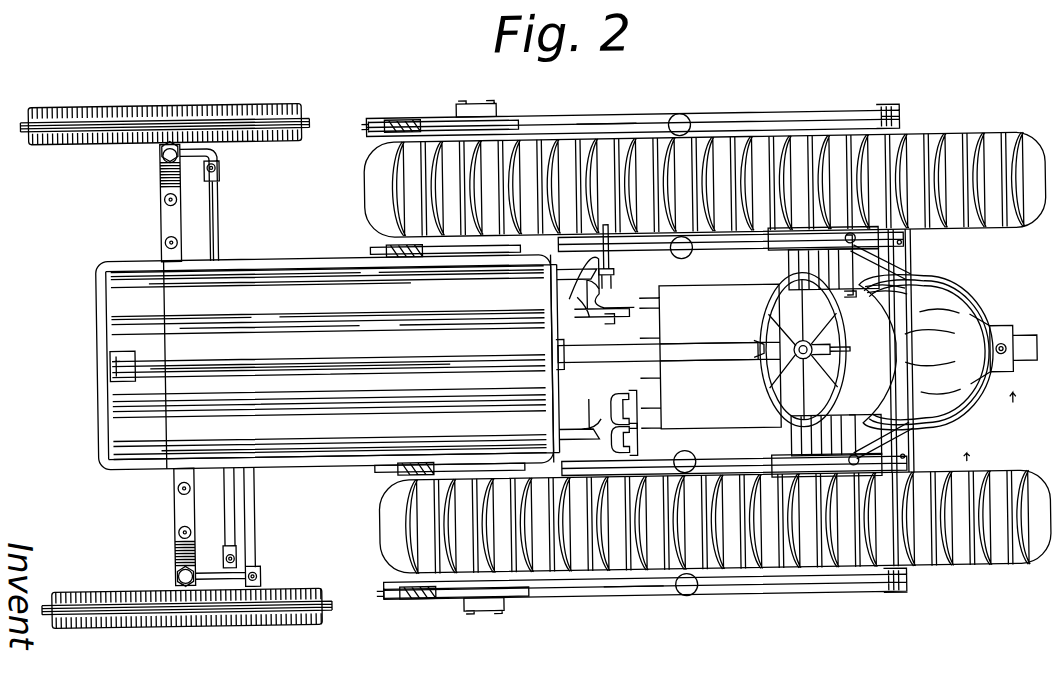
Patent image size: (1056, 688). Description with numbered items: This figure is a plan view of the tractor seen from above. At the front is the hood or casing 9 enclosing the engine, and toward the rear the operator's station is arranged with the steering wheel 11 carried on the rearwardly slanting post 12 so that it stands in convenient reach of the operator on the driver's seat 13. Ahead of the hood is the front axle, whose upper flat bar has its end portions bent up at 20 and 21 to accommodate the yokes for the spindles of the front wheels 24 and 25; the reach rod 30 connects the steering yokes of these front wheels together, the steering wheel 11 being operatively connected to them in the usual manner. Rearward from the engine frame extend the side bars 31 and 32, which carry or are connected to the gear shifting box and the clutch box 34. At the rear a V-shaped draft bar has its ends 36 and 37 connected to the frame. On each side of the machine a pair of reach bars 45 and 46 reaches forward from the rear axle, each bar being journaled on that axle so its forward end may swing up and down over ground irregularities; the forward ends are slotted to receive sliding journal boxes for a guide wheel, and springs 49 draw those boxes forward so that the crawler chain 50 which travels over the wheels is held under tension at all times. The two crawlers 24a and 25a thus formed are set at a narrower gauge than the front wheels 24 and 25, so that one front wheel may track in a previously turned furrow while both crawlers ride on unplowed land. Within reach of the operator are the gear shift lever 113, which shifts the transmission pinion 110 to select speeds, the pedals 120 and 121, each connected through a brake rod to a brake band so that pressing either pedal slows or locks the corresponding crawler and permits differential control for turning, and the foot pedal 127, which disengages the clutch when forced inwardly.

The hood or casing 9 is at (328, 362).
The steering wheel 11 is at (770, 310).
The rearwardly slanting post 12 is at (712, 336).
The driver's seat 13 is at (966, 322).
The bent-up end portion of upper flat bar 20 is at (162, 177).
The bent-up end portion of upper flat bar 21 is at (172, 546).
The front wheel 24 is at (137, 101).
The crawler 24a is at (370, 186).
The front wheel 25 is at (212, 625).
The crawler 25a is at (380, 522).
The reach rod 30 is at (222, 228).
The side bar 31 is at (560, 276).
The side bar 32 is at (560, 438).
The clutch box 34 is at (602, 299).
The end of draft bar 36 is at (882, 272).
The end of draft bar 37 is at (882, 438).
The reach bar 45 is at (728, 250).
The reach bar 46 is at (732, 118).
The spring 49 is at (405, 118).
The crawler chain 50 is at (536, 150).
The pinion 110 is at (602, 598).
The gear shift lever 113 is at (884, 290).
The pedal 120 is at (638, 406).
The pedal 121 is at (640, 440).
The foot pedal 127 is at (612, 262).